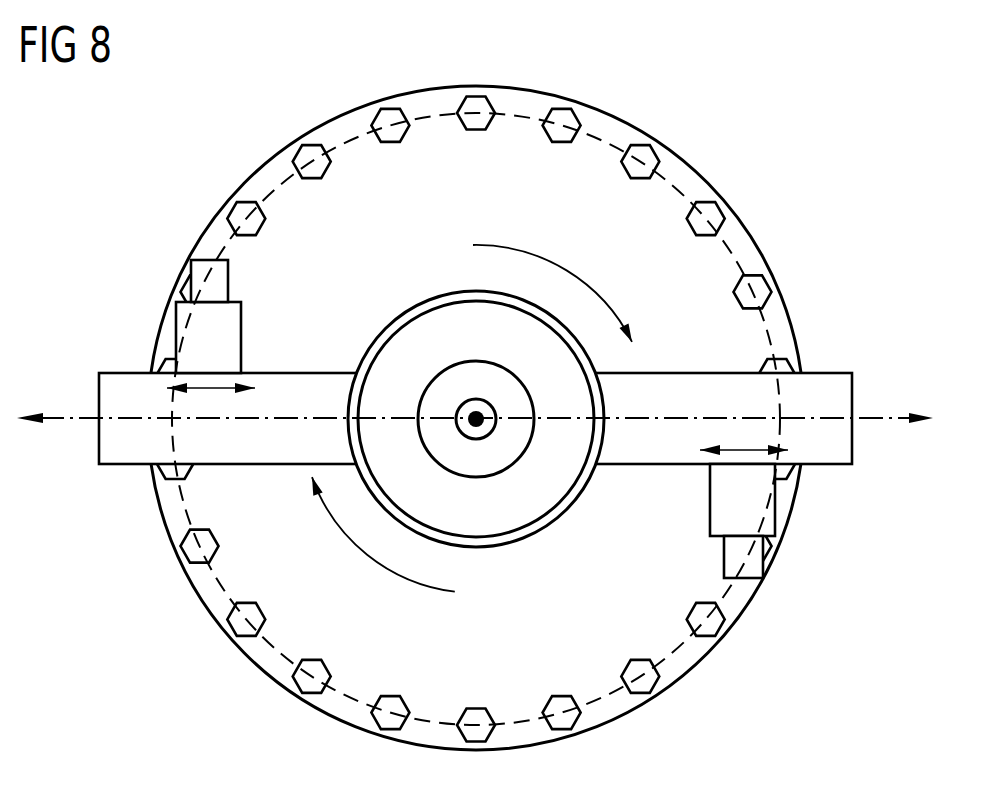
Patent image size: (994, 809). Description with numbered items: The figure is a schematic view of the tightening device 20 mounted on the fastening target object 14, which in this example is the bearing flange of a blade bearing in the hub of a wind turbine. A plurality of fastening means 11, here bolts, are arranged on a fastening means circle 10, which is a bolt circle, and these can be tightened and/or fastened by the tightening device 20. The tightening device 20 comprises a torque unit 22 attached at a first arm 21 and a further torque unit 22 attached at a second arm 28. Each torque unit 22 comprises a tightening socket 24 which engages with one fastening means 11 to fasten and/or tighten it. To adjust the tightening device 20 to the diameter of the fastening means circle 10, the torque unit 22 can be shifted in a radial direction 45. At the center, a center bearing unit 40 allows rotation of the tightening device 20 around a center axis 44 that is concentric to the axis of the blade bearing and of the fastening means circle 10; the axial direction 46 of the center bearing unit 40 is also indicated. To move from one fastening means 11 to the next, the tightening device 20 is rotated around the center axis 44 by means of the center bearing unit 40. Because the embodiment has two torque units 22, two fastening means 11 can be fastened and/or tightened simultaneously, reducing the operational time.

The fastening means circle 10 is at (438, 118).
The fastening means 11 is at (703, 208).
The fastening target object 14 is at (603, 710).
The tightening device 20 is at (475, 401).
The first arm 21 is at (650, 417).
The torque unit 22 is at (241, 337).
The tightening socket 24 is at (228, 279).
The second arm 28 is at (667, 468).
The center bearing unit 40 is at (363, 500).
The center axis 44 is at (476, 410).
The radial direction 45 is at (63, 415).
The axial direction 46 is at (476, 419).